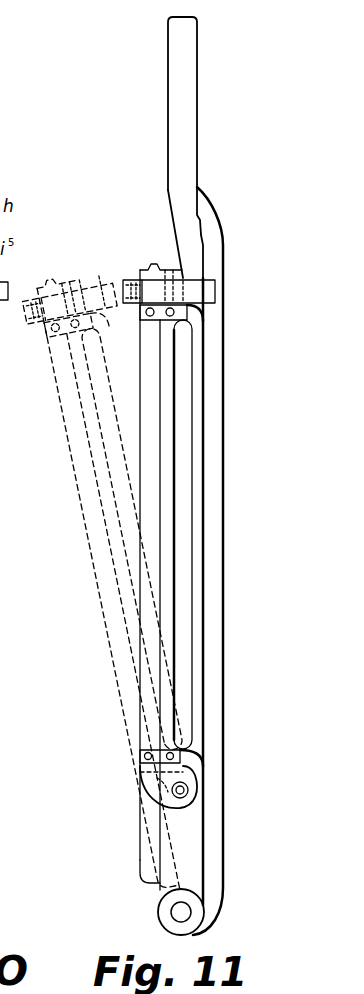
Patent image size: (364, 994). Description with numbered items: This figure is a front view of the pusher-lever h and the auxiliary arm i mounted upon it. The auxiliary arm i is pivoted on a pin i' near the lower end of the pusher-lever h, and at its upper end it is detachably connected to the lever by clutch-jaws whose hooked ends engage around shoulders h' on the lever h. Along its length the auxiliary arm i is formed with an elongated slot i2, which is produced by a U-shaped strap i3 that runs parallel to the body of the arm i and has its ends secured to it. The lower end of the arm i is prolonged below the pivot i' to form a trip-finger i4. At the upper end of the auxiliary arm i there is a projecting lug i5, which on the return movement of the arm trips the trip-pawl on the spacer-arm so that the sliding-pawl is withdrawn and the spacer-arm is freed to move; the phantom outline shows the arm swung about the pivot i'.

The pusher-lever h is at (194, 147).
The shoulders h' is at (210, 561).
The auxiliary arm i is at (143, 605).
The pin i' is at (196, 782).
The elongated slot i2 is at (183, 460).
The U-shaped strap i3 is at (198, 578).
The trip-finger i4 is at (142, 880).
The projecting lug i5 is at (42, 285).